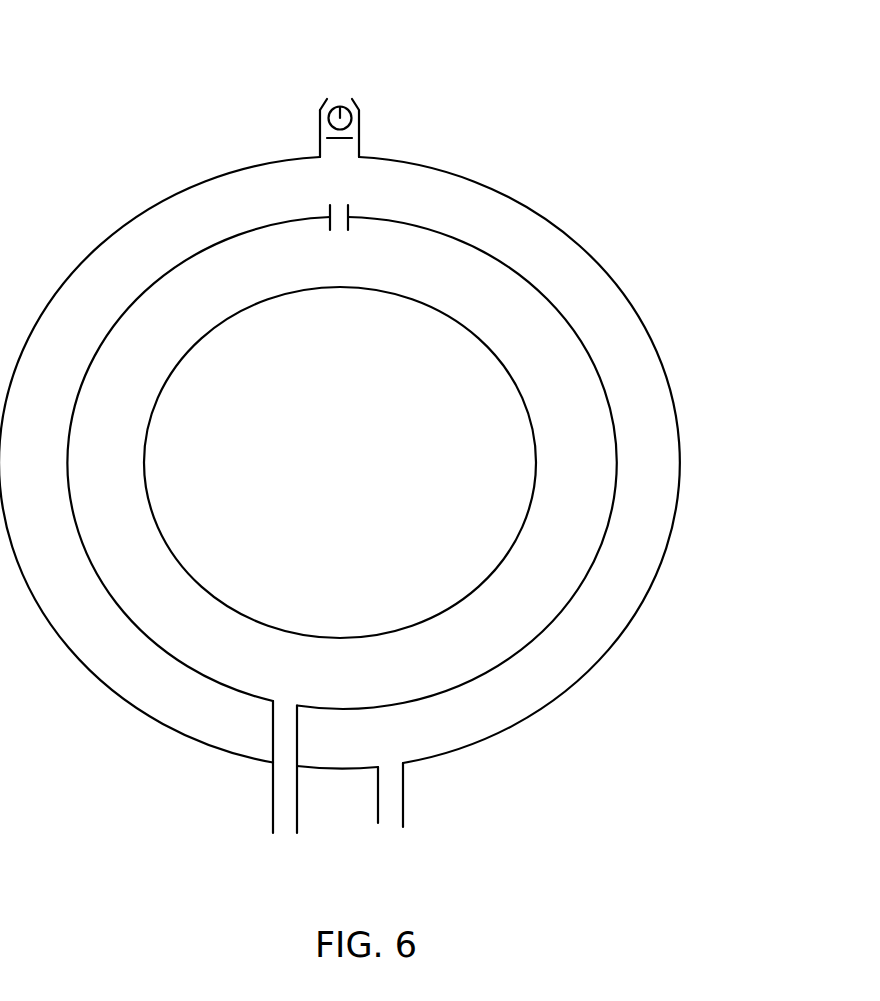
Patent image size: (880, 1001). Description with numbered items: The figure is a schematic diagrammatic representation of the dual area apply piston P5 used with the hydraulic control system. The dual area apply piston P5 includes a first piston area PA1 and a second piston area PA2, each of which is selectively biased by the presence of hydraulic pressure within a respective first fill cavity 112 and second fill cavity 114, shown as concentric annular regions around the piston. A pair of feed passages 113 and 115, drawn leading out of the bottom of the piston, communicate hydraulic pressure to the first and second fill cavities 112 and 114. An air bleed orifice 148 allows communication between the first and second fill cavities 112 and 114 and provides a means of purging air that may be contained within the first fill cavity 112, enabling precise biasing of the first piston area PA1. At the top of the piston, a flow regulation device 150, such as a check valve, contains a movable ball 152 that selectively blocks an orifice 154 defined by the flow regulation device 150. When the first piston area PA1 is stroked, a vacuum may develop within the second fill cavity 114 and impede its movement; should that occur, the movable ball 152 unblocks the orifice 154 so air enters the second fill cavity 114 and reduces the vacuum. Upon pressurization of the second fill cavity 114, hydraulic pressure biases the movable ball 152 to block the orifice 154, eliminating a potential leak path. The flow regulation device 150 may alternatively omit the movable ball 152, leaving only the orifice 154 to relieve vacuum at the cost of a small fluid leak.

The dual area apply piston P5 is at (660, 266).
The first fill cavity 112 is at (568, 498).
The second fill cavity 114 is at (628, 563).
The feed passage 113 is at (273, 794).
The feed passage 115 is at (403, 793).
The air bleed orifice 148 is at (334, 206).
The flow regulation device 150 is at (380, 109).
The movable ball 152 is at (340, 106).
The orifice 154 is at (322, 106).
The first piston area PA1 is at (360, 562).
The second piston area PA2 is at (400, 752).